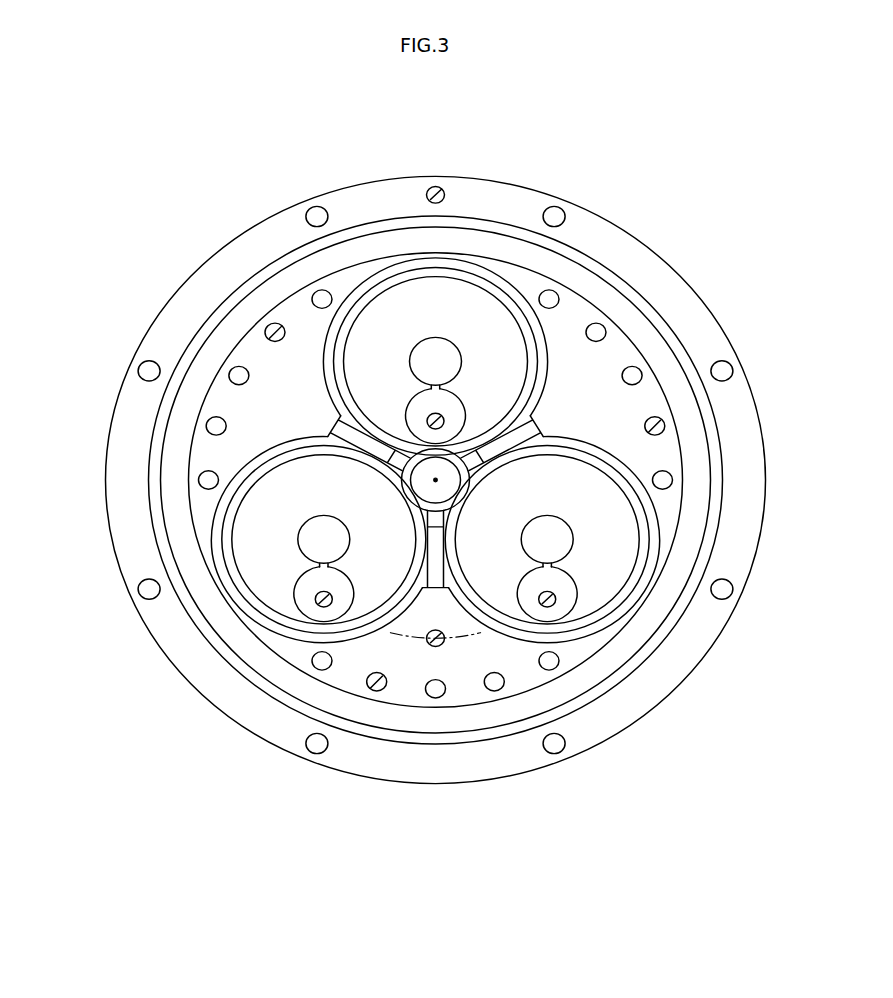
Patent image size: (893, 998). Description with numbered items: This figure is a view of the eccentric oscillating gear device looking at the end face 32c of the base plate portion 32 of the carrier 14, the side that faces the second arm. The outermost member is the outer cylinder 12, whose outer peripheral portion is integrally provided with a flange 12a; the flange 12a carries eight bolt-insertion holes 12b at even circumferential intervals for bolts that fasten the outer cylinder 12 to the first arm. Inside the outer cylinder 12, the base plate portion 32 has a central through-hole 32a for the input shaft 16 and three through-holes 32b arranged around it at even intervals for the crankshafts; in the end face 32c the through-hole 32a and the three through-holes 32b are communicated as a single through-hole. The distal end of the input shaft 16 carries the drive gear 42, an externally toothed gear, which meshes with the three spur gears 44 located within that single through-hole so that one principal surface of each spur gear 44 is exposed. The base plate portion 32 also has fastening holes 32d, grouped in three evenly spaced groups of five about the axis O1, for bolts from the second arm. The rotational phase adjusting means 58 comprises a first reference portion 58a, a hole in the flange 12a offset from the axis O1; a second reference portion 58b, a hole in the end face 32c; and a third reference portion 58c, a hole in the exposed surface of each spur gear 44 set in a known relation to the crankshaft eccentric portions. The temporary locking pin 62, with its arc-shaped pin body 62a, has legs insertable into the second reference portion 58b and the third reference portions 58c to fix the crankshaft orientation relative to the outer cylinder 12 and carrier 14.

The outer cylinder 12 is at (435, 479).
The flange 12a is at (735, 630).
The bolt-insertion holes 12b is at (138, 368).
The carrier 14 is at (434, 488).
The input shaft 16 is at (333, 410).
The base plate portion 32 is at (434, 488).
The through-hole 32a is at (683, 405).
The through-holes 32b is at (518, 300).
The end face 32c is at (573, 313).
The fastening holes 32d is at (272, 326).
The drive gear 42 is at (227, 527).
The spur gear 44 is at (490, 265).
The rotational phase adjusting means 58 is at (390, 482).
The first reference portion 58a is at (430, 191).
The second reference portion 58b is at (441, 646).
The third reference portion 58c is at (428, 418).
The temporary locking pin 62 is at (406, 735).
The pin body 62a is at (402, 642).
The axis O1 is at (437, 481).